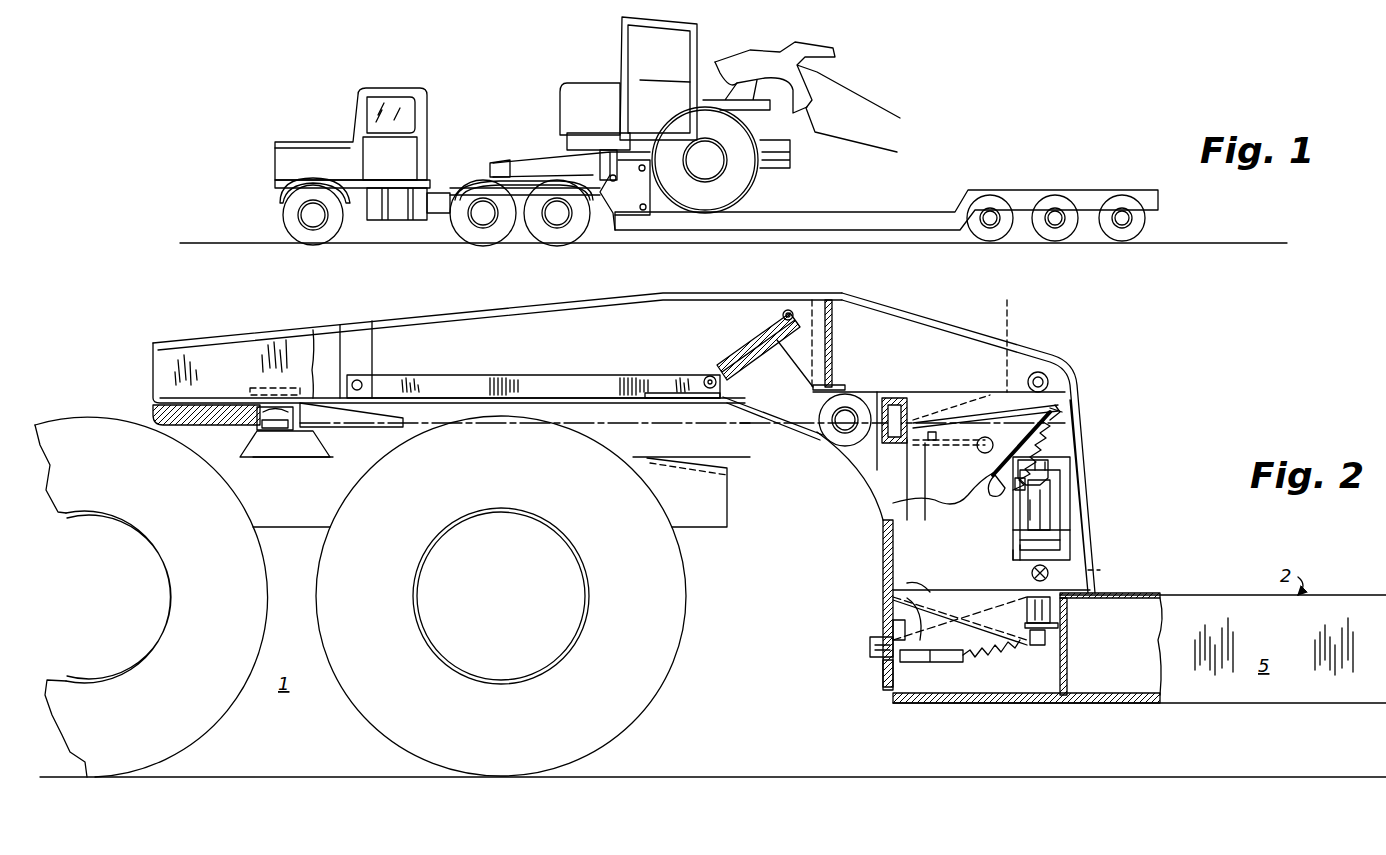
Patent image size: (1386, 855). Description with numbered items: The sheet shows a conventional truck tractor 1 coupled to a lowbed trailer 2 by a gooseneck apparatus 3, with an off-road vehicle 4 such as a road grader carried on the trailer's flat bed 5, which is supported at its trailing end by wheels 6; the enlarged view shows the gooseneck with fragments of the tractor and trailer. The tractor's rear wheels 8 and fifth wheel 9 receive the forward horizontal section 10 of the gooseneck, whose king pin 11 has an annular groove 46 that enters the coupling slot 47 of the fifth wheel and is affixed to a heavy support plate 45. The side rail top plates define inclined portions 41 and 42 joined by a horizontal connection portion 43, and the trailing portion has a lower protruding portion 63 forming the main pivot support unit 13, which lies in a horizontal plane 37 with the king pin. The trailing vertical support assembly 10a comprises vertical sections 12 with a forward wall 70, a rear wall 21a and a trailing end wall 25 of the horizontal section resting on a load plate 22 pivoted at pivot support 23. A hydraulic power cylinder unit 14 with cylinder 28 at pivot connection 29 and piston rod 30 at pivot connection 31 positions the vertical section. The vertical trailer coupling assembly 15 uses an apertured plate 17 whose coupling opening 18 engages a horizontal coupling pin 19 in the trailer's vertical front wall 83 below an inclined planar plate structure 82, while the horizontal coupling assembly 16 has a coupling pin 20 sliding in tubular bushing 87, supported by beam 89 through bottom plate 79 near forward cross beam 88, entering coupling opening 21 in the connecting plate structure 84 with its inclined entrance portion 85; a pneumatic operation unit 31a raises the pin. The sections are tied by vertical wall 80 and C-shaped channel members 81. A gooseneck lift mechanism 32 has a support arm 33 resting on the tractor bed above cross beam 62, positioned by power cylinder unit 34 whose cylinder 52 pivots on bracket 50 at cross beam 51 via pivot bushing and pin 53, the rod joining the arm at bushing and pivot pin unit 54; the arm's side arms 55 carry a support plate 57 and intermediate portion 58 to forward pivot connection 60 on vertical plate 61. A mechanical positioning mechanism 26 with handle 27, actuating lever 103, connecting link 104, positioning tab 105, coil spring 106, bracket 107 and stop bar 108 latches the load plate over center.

In FIG. 1, the truck tractor 1 is at (440, 110).
In FIG. 1, the lowbed trailer 2 is at (882, 212).
In FIG. 1, the gooseneck apparatus 3 is at (603, 220).
In FIG. 2, the gooseneck apparatus 3 is at (800, 570).
In FIG. 1, the off-road vehicle 4 is at (615, 50).
In FIG. 1, the flat bed 5 is at (820, 212).
In FIG. 2, the flat bed 5 is at (1139, 648).
In FIG. 1, the wheels 6 is at (1110, 200).
In FIG. 1, the rear wheels 8 is at (520, 228).
In FIG. 2, the rear wheels 8 is at (260, 493).
In FIG. 1, the fifth wheel 9 is at (507, 168).
In FIG. 2, the fifth wheel 9 is at (200, 430).
In FIG. 1, the horizontal section 10 is at (548, 155).
In FIG. 2, the horizontal section 10 is at (262, 335).
In FIG. 2, the vertical support assembly 10a is at (870, 515).
In FIG. 2, the king pin 11 is at (270, 430).
In FIG. 1, the vertical section 12 is at (660, 205).
In FIG. 2, the main pivot support unit 13 is at (825, 430).
In FIG. 2, the hydraulic power cylinder unit 14 is at (1072, 518).
In FIG. 2, the vertical trailer coupling assembly 15 is at (875, 675).
In FIG. 2, the horizontal coupling assembly 16 is at (1040, 648).
In FIG. 2, the apertured plate 17 is at (883, 680).
In FIG. 2, the coupling opening 18 is at (892, 630).
In FIG. 2, the horizontal coupling pin 19 is at (870, 648).
In FIG. 2, the coupling pin 20 is at (1060, 650).
In FIG. 2, the coupling opening 21 is at (1045, 638).
In FIG. 2, the rear wall 21a is at (1080, 548).
In FIG. 2, the load plate 22 is at (1075, 425).
In FIG. 2, the pivot support 23 is at (1072, 483).
In FIG. 2, the trailing end wall 25 is at (1070, 408).
In FIG. 2, the mechanical positioning mechanism 26 is at (975, 455).
In FIG. 2, the handle 27 is at (945, 448).
In FIG. 2, the cylinder 28 is at (1010, 547).
In FIG. 2, the pivot connection 29 is at (1030, 573).
In FIG. 2, the piston rod 30 is at (1075, 450).
In FIG. 2, the pivot connection 31 is at (1050, 375).
In FIG. 2, the pneumatic operation unit 31a is at (1085, 500).
In FIG. 2, the gooseneck lift mechanism 32 is at (737, 345).
In FIG. 2, the support arm 33 is at (605, 398).
In FIG. 2, the power cylinder unit 34 is at (760, 345).
In FIG. 2, the horizontal plane 37 is at (492, 420).
In FIG. 2, the rearwardly inclined portion 41 is at (485, 312).
In FIG. 2, the forwardly inclined portion 42 is at (972, 328).
In FIG. 2, the horizontal connection portion 43 is at (735, 298).
In FIG. 2, the support plate 45 is at (238, 372).
In FIG. 2, the annular groove 46 is at (262, 432).
In FIG. 2, the coupling slot 47 is at (335, 425).
In FIG. 2, the pivot arm bracket 50 is at (800, 345).
In FIG. 2, the cross beam 51 is at (833, 362).
In FIG. 2, the cylinder 52 is at (742, 368).
In FIG. 2, the pivot bushing and pin 53 is at (789, 310).
In FIG. 2, the bushing and pivot pin unit 54 is at (705, 378).
In FIG. 2, the side arm 55 is at (508, 375).
In FIG. 2, the support plate 57 is at (678, 398).
In FIG. 2, the intermediate portion 58 is at (615, 382).
In FIG. 2, the forward pivot connection 60 is at (362, 380).
In FIG. 2, the vertical plate 61 is at (375, 345).
In FIG. 2, the cross beam 62 is at (730, 478).
In FIG. 2, the lower protruding portion 63 is at (790, 410).
In FIG. 2, the forward wall 70 is at (885, 530).
In FIG. 2, the bottom plate 79 is at (965, 592).
In FIG. 2, the vertical wall 80 is at (897, 483).
In FIG. 2, the C-shaped channel member 81 is at (880, 445).
In FIG. 2, the inclined planar plate structure 82 is at (900, 612).
In FIG. 2, the vertical front wall 83 is at (893, 697).
In FIG. 2, the connecting plate structure 84 is at (950, 662).
In FIG. 2, the inclined entrance portion 85 is at (972, 652).
In FIG. 2, the tubular bushing 87 is at (1050, 612).
In FIG. 2, the forward cross beam 88 is at (1090, 570).
In FIG. 2, the supporting beam 89 is at (900, 590).
In FIG. 2, the actuating lever 103 is at (913, 420).
In FIG. 2, the connecting link 104 is at (978, 415).
In FIG. 2, the positioning tab 105 is at (1065, 395).
In FIG. 2, the coil spring 106 is at (990, 478).
In FIG. 2, the bracket 107 is at (1017, 492).
In FIG. 2, the stop bar 108 is at (992, 440).